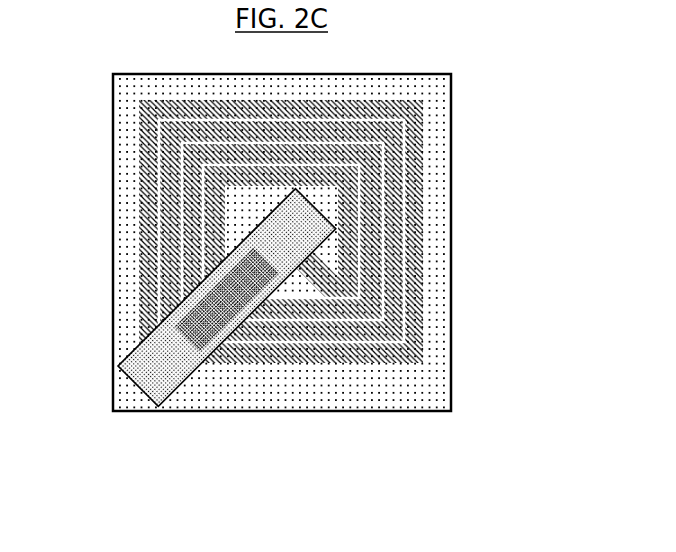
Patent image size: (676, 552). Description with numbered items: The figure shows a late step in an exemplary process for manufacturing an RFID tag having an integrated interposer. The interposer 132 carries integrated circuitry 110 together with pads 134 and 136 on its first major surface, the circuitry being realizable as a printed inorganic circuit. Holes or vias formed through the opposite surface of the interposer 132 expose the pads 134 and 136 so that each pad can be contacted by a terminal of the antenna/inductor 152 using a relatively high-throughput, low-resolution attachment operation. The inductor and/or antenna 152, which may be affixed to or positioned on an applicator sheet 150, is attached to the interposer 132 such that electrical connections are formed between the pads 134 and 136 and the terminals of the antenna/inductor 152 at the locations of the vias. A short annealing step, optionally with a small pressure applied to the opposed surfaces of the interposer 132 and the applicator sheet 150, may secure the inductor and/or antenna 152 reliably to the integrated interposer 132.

The integrated circuitry 110 is at (177, 240).
The interposer 132 is at (114, 364).
The pad 134 is at (165, 326).
The pad 136 is at (272, 216).
The applicator sheet 150 is at (453, 222).
The antenna/inductor 152 is at (413, 140).